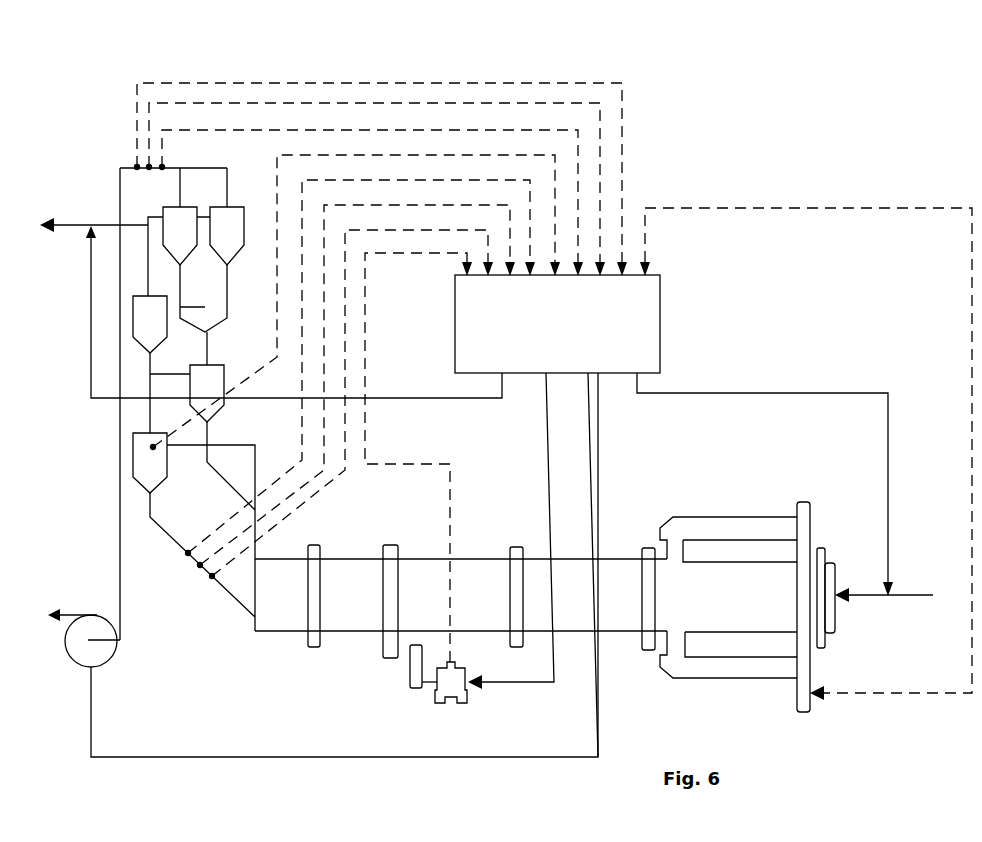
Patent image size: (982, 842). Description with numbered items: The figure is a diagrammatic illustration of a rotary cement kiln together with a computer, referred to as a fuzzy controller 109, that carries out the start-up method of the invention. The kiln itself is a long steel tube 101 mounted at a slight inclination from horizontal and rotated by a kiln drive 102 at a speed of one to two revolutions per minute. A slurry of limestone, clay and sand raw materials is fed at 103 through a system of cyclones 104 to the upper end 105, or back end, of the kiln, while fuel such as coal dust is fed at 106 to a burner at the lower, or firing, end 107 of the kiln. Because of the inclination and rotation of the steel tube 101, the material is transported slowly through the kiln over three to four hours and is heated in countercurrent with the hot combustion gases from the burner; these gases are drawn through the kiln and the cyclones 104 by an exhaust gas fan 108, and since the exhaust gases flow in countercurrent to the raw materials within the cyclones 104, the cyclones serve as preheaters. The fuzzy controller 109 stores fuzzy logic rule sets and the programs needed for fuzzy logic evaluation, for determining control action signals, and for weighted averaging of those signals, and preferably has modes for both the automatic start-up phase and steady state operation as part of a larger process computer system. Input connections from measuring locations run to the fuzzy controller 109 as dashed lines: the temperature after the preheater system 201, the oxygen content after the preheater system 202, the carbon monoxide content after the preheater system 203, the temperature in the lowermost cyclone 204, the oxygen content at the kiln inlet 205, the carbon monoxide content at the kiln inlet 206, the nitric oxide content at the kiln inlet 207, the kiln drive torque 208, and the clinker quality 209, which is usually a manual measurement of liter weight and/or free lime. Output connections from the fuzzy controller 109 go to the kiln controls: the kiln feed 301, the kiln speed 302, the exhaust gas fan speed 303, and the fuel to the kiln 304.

The steel tube 101 is at (617, 622).
The kiln drive 102 is at (465, 690).
The raw material feed 103 is at (63, 223).
The cyclones 104 is at (136, 188).
The upper end of the kiln 105 is at (277, 613).
The fuel feed 106 is at (917, 597).
The lower end of the kiln 107 is at (832, 633).
The exhaust gas fan 108 is at (74, 648).
The fuzzy controller 109 is at (648, 324).
The temperature after the preheater system 201 is at (201, 83).
The O2 after the preheater system 202 is at (277, 103).
The CO after the preheater system 203 is at (359, 130).
The temperature in the lowermost cyclone 204 is at (437, 155).
The O2 at the kiln inlet 205 is at (302, 460).
The CO at the kiln inlet 206 is at (278, 505).
The NO at the kiln inlet 207 is at (317, 492).
The kiln drive torque 208 is at (415, 464).
The clinker quality 209 is at (765, 208).
The kiln feed 301 is at (460, 398).
The kiln speed 302 is at (548, 490).
The exhaust gas fan speed 303 is at (592, 464).
The fuel to kiln 304 is at (802, 393).